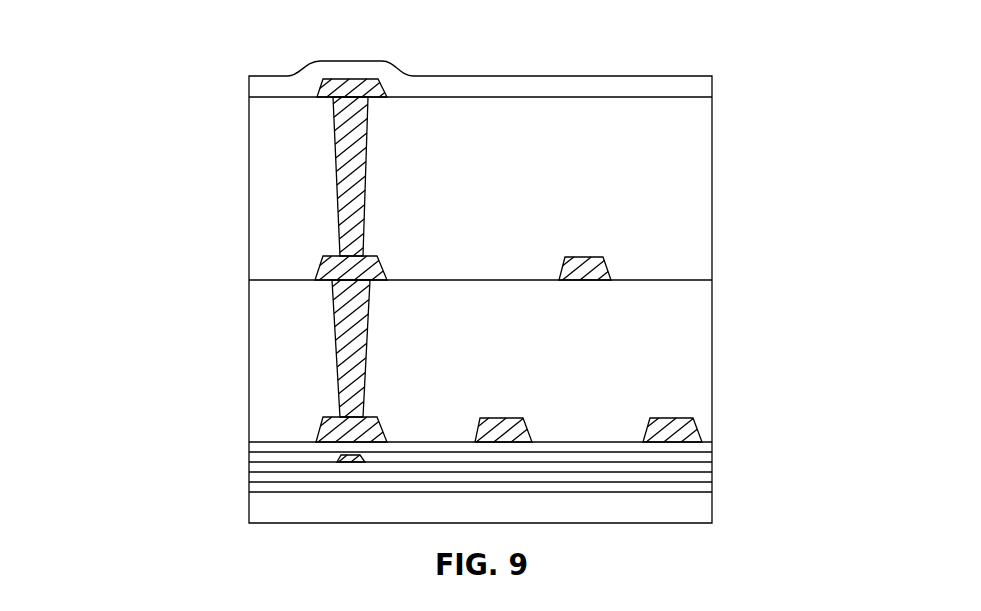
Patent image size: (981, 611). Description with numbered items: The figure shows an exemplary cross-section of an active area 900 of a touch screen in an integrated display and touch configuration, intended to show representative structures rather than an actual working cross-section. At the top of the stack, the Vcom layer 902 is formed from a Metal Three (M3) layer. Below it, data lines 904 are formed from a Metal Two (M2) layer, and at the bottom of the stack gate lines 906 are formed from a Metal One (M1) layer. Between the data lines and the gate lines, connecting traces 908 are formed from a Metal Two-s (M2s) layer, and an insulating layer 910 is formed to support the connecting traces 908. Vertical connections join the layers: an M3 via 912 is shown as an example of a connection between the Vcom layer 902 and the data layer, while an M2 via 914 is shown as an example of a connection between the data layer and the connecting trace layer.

The active area 900 is at (229, 26).
The Vcom layer 902 is at (317, 87).
The data lines 904 is at (602, 233).
The gate lines 906 is at (338, 460).
The connecting traces 908 is at (522, 395).
The insulating layer 910 is at (698, 367).
The M3 via 912 is at (340, 192).
The M2 via 914 is at (365, 365).